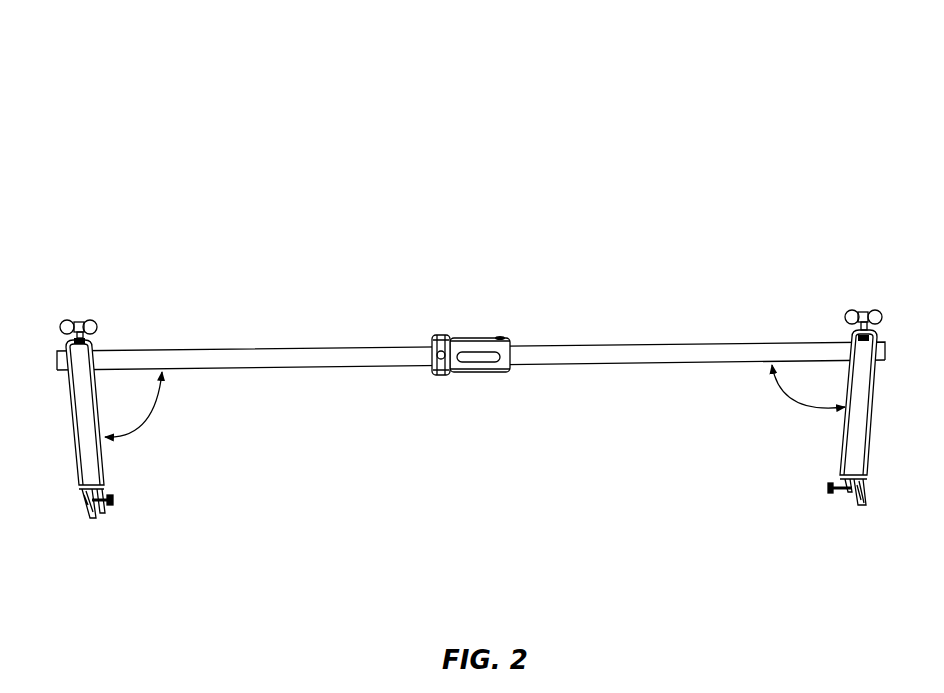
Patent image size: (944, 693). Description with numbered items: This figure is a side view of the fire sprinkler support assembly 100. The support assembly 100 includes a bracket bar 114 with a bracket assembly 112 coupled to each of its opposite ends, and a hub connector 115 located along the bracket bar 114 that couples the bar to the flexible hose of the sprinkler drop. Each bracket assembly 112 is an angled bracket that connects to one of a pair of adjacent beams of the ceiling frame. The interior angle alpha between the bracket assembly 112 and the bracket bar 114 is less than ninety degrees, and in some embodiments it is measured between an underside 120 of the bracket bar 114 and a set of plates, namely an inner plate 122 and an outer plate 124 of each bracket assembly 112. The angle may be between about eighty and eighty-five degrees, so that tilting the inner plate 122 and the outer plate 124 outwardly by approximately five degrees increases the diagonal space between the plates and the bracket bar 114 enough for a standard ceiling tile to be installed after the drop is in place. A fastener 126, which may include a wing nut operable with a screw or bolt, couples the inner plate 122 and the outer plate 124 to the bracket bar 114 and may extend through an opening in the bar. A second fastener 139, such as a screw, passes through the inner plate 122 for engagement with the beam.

The support assembly 100 is at (397, 86).
The bracket assembly 112 is at (72, 303).
The bracket bar 114 is at (275, 360).
The hub connector 115 is at (463, 381).
The underside 120 is at (257, 369).
The inner plate 122 is at (101, 453).
The outer plate 124 is at (75, 450).
The fastener 126 is at (90, 308).
The second fastener 139 is at (112, 514).